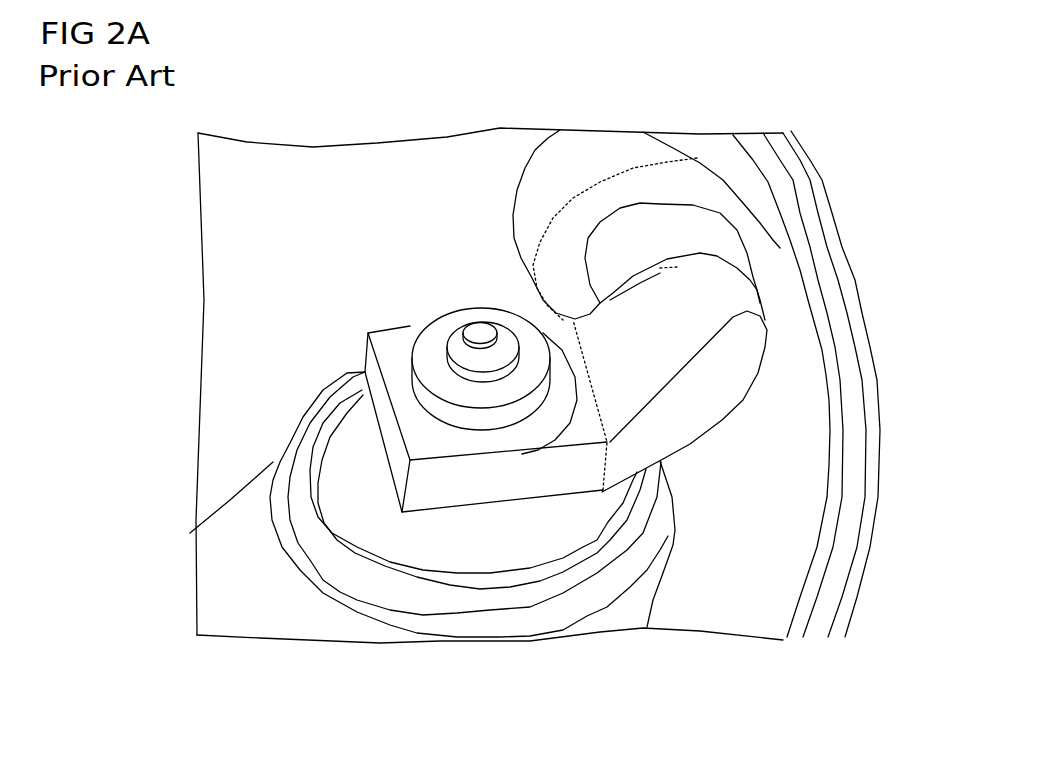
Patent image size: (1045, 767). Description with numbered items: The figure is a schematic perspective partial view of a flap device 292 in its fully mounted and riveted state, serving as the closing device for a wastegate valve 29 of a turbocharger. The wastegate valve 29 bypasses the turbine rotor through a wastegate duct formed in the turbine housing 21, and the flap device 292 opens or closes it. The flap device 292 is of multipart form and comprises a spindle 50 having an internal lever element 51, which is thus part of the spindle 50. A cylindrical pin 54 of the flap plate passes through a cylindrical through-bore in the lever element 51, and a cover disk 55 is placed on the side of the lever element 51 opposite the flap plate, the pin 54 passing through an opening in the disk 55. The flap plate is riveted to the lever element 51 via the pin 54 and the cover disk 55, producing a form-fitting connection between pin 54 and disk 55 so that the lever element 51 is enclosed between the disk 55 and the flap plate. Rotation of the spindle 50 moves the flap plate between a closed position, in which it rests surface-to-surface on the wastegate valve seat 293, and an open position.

The turbine housing 21 is at (789, 428).
The wastegate valve 29 is at (564, 348).
The spindle 50 is at (646, 275).
The lever element 51 is at (488, 523).
The cylindrical pin 54 is at (496, 220).
The cover disk 55 is at (445, 244).
The flap device 292 is at (503, 256).
The wastegate valve seat 293 is at (432, 549).